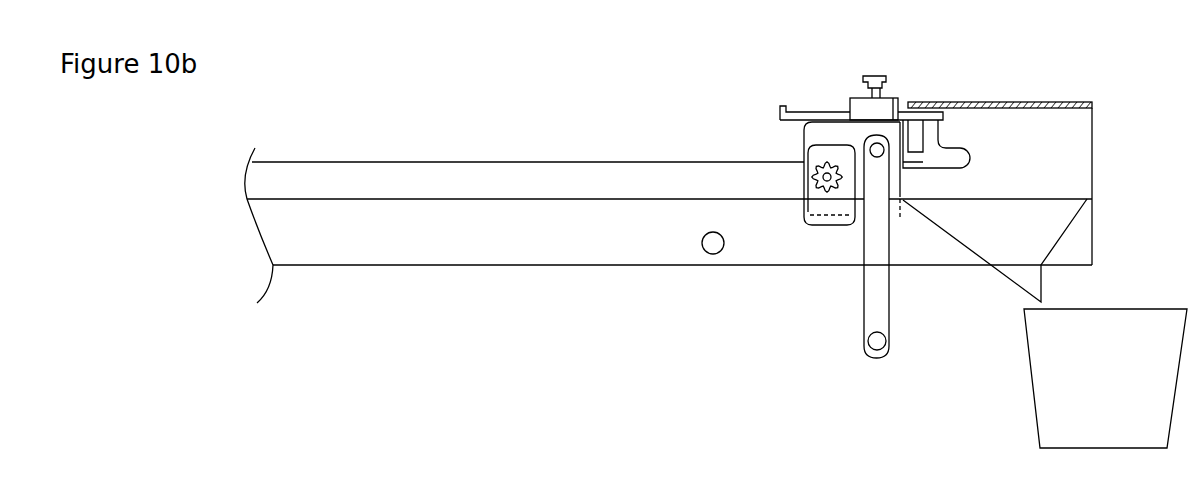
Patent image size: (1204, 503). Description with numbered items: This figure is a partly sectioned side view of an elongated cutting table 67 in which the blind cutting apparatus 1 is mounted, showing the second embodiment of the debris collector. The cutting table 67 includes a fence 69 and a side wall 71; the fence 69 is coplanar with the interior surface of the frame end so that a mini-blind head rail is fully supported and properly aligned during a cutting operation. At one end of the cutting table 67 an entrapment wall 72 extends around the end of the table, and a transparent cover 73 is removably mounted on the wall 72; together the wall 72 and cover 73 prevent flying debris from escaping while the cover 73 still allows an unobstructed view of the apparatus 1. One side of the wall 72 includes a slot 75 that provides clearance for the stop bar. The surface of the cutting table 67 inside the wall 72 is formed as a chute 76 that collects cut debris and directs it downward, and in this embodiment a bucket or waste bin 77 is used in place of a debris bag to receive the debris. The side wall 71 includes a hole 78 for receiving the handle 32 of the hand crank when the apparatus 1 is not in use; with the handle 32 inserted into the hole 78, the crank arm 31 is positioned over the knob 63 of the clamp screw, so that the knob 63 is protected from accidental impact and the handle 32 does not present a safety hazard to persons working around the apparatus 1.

The apparatus 1 is at (814, 62).
The crank arm 31 is at (870, 278).
The handle 32 is at (868, 340).
The knob 63 is at (815, 175).
The cutting table 67 is at (436, 106).
The fence 69 is at (582, 170).
The side wall 71 is at (428, 240).
The entrapment wall 72 is at (1095, 155).
The transparent cover 73 is at (1070, 102).
The slot 75 is at (975, 155).
The chute 76 is at (995, 248).
The waste bin 77 is at (1112, 362).
The hole 78 is at (712, 255).